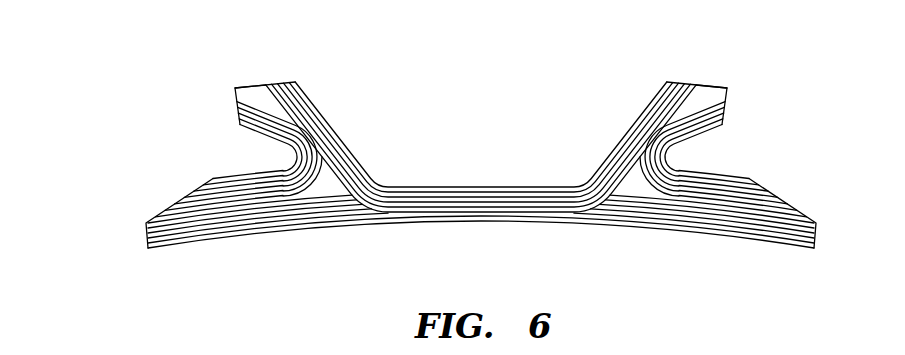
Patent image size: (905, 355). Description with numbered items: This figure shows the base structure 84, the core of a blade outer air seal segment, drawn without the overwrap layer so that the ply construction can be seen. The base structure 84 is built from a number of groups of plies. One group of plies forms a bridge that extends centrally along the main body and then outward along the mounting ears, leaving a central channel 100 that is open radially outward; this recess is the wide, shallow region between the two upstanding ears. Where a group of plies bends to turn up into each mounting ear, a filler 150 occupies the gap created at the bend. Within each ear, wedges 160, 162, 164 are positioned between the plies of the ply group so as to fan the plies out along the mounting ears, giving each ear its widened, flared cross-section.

The base structure 84 is at (124, 135).
The central channel 100 is at (500, 134).
The filler 150 is at (312, 183).
The wedge 160 is at (257, 93).
The wedge 162 is at (238, 101).
The wedge 164 is at (242, 119).